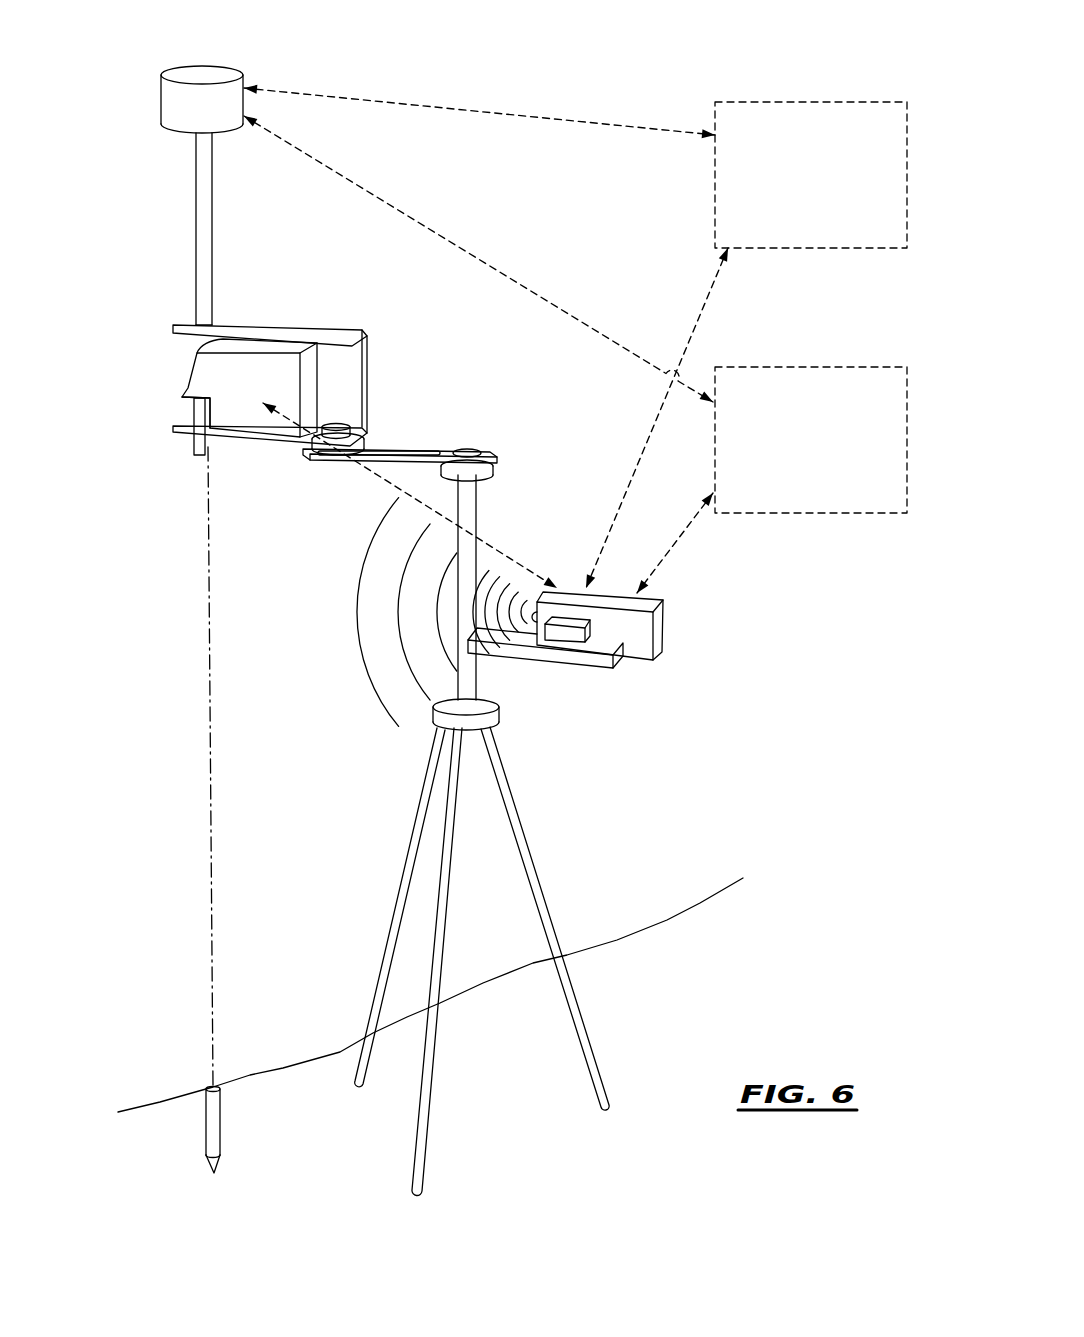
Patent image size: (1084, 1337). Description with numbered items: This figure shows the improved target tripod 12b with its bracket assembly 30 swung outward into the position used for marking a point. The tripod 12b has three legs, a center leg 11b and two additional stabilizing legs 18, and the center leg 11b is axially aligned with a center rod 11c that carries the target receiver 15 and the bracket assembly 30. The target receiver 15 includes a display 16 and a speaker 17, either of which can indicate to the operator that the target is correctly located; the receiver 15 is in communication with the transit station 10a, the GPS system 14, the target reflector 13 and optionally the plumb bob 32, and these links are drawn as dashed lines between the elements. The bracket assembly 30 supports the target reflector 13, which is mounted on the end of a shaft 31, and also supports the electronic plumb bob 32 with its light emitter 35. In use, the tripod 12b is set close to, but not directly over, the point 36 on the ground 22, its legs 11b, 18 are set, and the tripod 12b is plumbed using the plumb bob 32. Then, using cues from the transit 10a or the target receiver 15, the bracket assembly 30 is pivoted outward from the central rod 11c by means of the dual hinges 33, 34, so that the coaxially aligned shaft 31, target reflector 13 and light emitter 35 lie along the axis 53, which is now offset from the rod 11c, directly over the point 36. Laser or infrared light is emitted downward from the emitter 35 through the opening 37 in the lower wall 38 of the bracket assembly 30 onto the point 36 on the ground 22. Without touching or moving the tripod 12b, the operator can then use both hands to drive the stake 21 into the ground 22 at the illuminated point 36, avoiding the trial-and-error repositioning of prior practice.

The target reflector 13 is at (212, 68).
The GPS system 14 is at (767, 124).
The transit station 10a is at (835, 402).
The shaft 31 is at (205, 221).
The bracket assembly 30 is at (378, 366).
The electronic plumb bob 32 is at (191, 378).
The hinge 33 is at (365, 432).
The hinge 34 is at (480, 447).
The light emitter 35 is at (186, 403).
The opening 37 is at (197, 437).
The lower wall 38 is at (238, 434).
The center rod 11c is at (470, 518).
The target receiver 15 is at (660, 620).
The display 16 is at (589, 631).
The speaker 17 is at (533, 618).
The target tripod 12b is at (557, 722).
The stabilizing legs 18 is at (405, 890).
The center leg 11b is at (425, 1060).
The axis 53 is at (208, 642).
The ground 22 is at (160, 1100).
The point 36 is at (220, 1082).
The stake 21 is at (218, 1127).